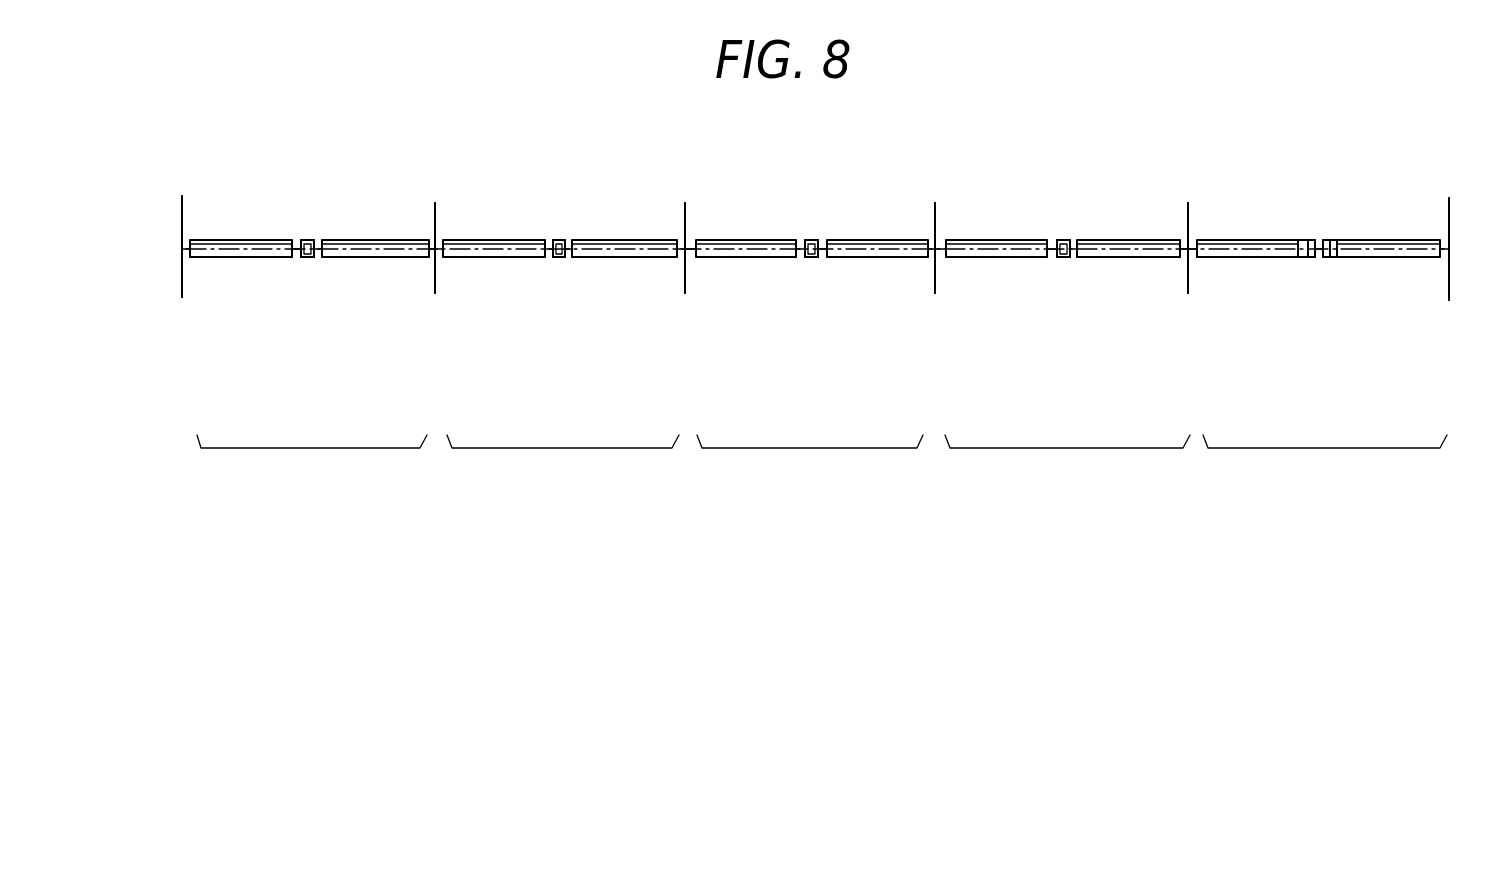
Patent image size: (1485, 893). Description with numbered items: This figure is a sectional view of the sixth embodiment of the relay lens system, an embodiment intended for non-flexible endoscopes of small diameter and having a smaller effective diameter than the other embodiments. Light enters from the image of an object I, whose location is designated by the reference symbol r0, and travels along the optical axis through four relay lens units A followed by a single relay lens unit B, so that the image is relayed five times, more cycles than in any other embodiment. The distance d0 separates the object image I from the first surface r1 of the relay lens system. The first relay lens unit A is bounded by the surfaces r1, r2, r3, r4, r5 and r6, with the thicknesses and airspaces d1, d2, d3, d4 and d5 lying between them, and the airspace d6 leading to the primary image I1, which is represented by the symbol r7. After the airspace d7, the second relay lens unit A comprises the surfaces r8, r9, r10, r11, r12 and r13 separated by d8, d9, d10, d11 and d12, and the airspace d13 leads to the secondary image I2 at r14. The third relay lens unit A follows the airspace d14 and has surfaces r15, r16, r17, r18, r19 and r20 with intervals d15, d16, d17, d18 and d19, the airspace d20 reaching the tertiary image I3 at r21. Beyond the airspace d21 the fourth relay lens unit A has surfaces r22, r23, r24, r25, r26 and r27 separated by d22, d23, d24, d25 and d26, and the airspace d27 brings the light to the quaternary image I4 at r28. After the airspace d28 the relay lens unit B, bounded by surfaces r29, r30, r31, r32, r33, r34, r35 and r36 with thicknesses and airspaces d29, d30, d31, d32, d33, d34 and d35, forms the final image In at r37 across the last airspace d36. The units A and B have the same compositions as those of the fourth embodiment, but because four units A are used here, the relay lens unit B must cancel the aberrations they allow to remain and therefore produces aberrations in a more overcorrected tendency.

The image of an object r0 is at (182, 214).
The first surface of the relay lens system r1 is at (197, 238).
The lens surface r2 is at (288, 240).
The lens surface r3 is at (297, 240).
The lens surface r4 is at (318, 240).
The lens surface r5 is at (327, 240).
The lens surface r6 is at (424, 240).
The primary image surface r7 is at (435, 208).
The lens surface r8 is at (450, 240).
The lens surface r9 is at (535, 240).
The lens surface r10 is at (547, 240).
The lens surface r11 is at (566, 240).
The lens surface r12 is at (580, 240).
The lens surface r13 is at (672, 240).
The secondary image surface r14 is at (685, 208).
The lens surface r15 is at (702, 240).
The lens surface r16 is at (788, 240).
The lens surface r17 is at (800, 240).
The lens surface r18 is at (822, 240).
The lens surface r19 is at (835, 240).
The lens surface r20 is at (922, 240).
The tertiary image surface r21 is at (935, 208).
The lens surface r22 is at (952, 240).
The lens surface r23 is at (1044, 240).
The lens surface r24 is at (1053, 240).
The lens surface r25 is at (1075, 240).
The lens surface r26 is at (1090, 240).
The lens surface r27 is at (1175, 240).
The quaternary image surface r28 is at (1188, 207).
The lens surface r29 is at (1204, 240).
The lens surface r30 is at (1298, 240).
The lens surface r31 is at (1305, 240).
The lens surface r32 is at (1311, 240).
The lens surface r33 is at (1320, 240).
The lens surface r34 is at (1330, 240).
The lens surface r35 is at (1340, 240).
The lens surface r36 is at (1437, 240).
The final image surface r37 is at (1449, 200).
The distance from object image to first surface d0 is at (183, 258).
The lens thickness d1 is at (233, 250).
The airspace d2 is at (296, 258).
The lens thickness d3 is at (307, 258).
The airspace d4 is at (317, 258).
The lens thickness d5 is at (353, 250).
The airspace d6 is at (423, 258).
The airspace d7 is at (443, 258).
The lens thickness d8 is at (478, 250).
The airspace d9 is at (547, 258).
The lens thickness d10 is at (557, 258).
The airspace d11 is at (567, 258).
The lens thickness d12 is at (606, 250).
The airspace d13 is at (682, 258).
The airspace d14 is at (690, 258).
The lens thickness d15 is at (731, 258).
The airspace d16 is at (800, 258).
The lens thickness d17 is at (810, 258).
The airspace d18 is at (823, 258).
The lens thickness d19 is at (860, 250).
The airspace d20 is at (930, 258).
The airspace d21 is at (940, 258).
The lens thickness d22 is at (990, 250).
The airspace d23 is at (1055, 258).
The lens thickness d24 is at (1060, 258).
The airspace d25 is at (1072, 258).
The lens thickness d26 is at (1118, 250).
The airspace d27 is at (1182, 258).
The airspace d28 is at (1193, 258).
The lens thickness d29 is at (1243, 250).
The lens thickness d30 is at (1300, 258).
The lens thickness d31 is at (1307, 258).
The airspace d32 is at (1318, 258).
The lens thickness d33 is at (1328, 258).
The lens thickness d34 is at (1338, 258).
The lens thickness d35 is at (1350, 258).
The airspace d36 is at (1397, 250).
The image of an object I is at (182, 293).
The primary image I1 is at (435, 293).
The secondary image I2 is at (685, 293).
The tertiary image I3 is at (935, 293).
The quaternary image I4 is at (1188, 293).
The final image In is at (1449, 300).
The relay lens unit A is at (693, 461).
The relay lens unit B is at (1325, 461).